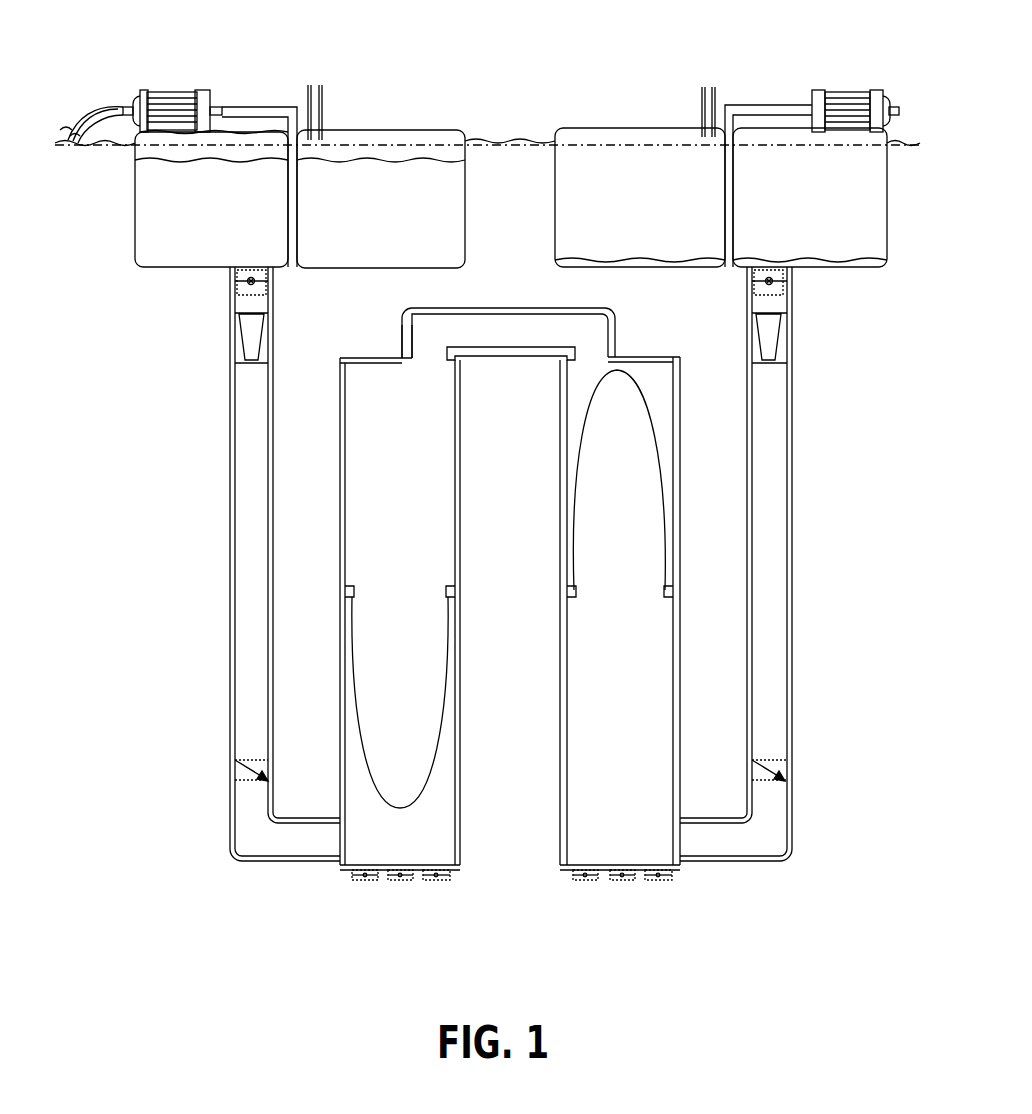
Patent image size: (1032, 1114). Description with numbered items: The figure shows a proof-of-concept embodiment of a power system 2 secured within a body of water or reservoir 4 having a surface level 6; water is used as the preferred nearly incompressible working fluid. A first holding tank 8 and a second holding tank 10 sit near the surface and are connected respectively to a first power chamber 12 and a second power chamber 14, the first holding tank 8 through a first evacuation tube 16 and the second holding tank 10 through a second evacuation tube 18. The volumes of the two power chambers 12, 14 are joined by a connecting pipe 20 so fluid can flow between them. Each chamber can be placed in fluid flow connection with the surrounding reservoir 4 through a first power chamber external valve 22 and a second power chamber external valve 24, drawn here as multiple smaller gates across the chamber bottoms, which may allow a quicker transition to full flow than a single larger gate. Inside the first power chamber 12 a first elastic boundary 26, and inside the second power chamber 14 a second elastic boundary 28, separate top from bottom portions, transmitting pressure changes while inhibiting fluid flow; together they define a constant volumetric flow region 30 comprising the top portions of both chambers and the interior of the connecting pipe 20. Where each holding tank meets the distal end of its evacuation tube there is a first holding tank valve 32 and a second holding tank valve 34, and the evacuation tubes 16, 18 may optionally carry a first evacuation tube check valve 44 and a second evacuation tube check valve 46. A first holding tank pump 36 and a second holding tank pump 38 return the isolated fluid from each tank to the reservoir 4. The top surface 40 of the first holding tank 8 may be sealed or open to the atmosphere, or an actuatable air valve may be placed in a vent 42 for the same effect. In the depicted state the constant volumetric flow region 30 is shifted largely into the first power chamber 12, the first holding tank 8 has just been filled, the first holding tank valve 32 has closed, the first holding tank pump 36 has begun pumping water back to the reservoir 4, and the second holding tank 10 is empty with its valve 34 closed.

The power system 2 is at (272, 906).
The body of water or reservoir 4 is at (70, 180).
The surface level 6 is at (520, 145).
The first holding tank 8 is at (135, 240).
The second holding tank 10 is at (888, 232).
The first power chamber 12 is at (452, 608).
The second power chamber 14 is at (560, 683).
The first evacuation tube 16 is at (228, 508).
The second evacuation tube 18 is at (795, 538).
The connecting pipe 20 is at (530, 308).
The first power chamber external valve 22 is at (386, 880).
The second power chamber external valve 24 is at (615, 880).
The first elastic boundary 26 is at (372, 788).
The second elastic boundary 28 is at (615, 372).
The constant volumetric flow region 30 is at (432, 340).
The first holding tank valve 32 is at (237, 282).
The second holding tank valve 34 is at (778, 285).
The first holding tank pump 36 is at (165, 90).
The second holding tank pump 38 is at (845, 88).
The top surface 40 is at (385, 130).
The vent 42 is at (323, 100).
The first evacuation tube check valve 44 is at (235, 773).
The second evacuation tube check valve 46 is at (790, 768).